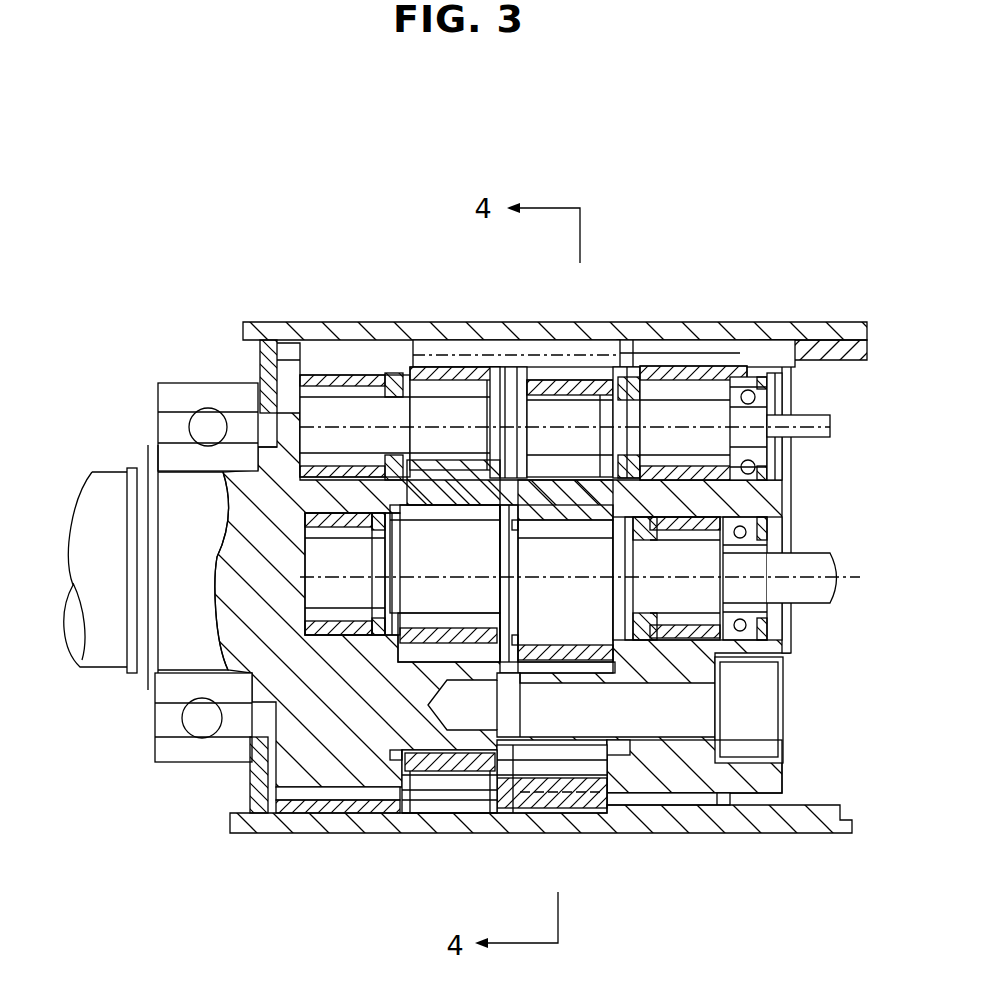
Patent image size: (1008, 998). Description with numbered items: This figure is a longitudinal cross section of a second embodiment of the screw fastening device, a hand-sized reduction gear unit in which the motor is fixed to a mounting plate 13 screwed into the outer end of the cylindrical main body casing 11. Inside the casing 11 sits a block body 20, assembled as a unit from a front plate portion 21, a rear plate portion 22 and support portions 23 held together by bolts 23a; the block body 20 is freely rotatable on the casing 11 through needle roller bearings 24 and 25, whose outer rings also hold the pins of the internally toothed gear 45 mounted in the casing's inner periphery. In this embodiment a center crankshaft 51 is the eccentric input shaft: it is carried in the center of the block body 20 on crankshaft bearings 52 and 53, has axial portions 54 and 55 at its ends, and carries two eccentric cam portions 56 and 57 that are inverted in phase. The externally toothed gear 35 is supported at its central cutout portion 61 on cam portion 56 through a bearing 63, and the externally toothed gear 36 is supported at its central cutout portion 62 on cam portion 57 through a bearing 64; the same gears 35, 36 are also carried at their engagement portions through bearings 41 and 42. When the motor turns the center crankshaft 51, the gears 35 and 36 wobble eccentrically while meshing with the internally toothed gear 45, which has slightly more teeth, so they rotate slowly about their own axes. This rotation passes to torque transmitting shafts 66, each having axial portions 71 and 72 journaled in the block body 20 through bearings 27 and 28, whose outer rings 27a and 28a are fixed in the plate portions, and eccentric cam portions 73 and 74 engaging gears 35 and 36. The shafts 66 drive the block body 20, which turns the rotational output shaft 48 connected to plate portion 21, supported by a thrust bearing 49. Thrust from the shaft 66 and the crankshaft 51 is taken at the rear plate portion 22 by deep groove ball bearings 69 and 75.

The main body casing 11 is at (742, 340).
The mounting plate 13 is at (830, 805).
The block body 20 is at (248, 785).
The plate portion 21 is at (323, 773).
The rear plate portion 22 is at (645, 787).
The support portion 23 is at (565, 750).
The bolt 23a is at (772, 720).
The needle roller bearing 24 is at (362, 790).
The needle roller bearing 25 is at (695, 808).
The bearing 27 is at (345, 360).
The outer ring 27a is at (292, 358).
The bearing 28 is at (682, 397).
The outer ring 28a is at (636, 376).
The externally toothed gear 35 is at (417, 792).
The externally toothed gear 36 is at (516, 812).
The bearing 41 is at (425, 365).
The bearing 42 is at (548, 366).
The internally toothed gear 45 is at (468, 815).
The rotational output shaft 48 is at (96, 668).
The bearing 49 is at (206, 415).
The center crankshaft 51 is at (825, 553).
The crankshaft bearing 52 is at (352, 574).
The crankshaft bearing 53 is at (666, 536).
The axial portion 54 is at (321, 605).
The axial portion 55 is at (668, 608).
The eccentric cam portion 56 is at (408, 558).
The eccentric cam portion 57 is at (558, 616).
The central cutout portion 61 is at (458, 492).
The central cutout portion 62 is at (585, 510).
The bearing 63 is at (410, 630).
The bearing 64 is at (538, 527).
The torque transmitting shaft 66 is at (805, 422).
The deep groove ball bearing 69 is at (752, 388).
The axial portion 71 is at (323, 450).
The axial portion 72 is at (669, 453).
The eccentric cam portion 73 is at (432, 414).
The eccentric cam portion 74 is at (555, 456).
The deep groove ball bearing 75 is at (760, 602).